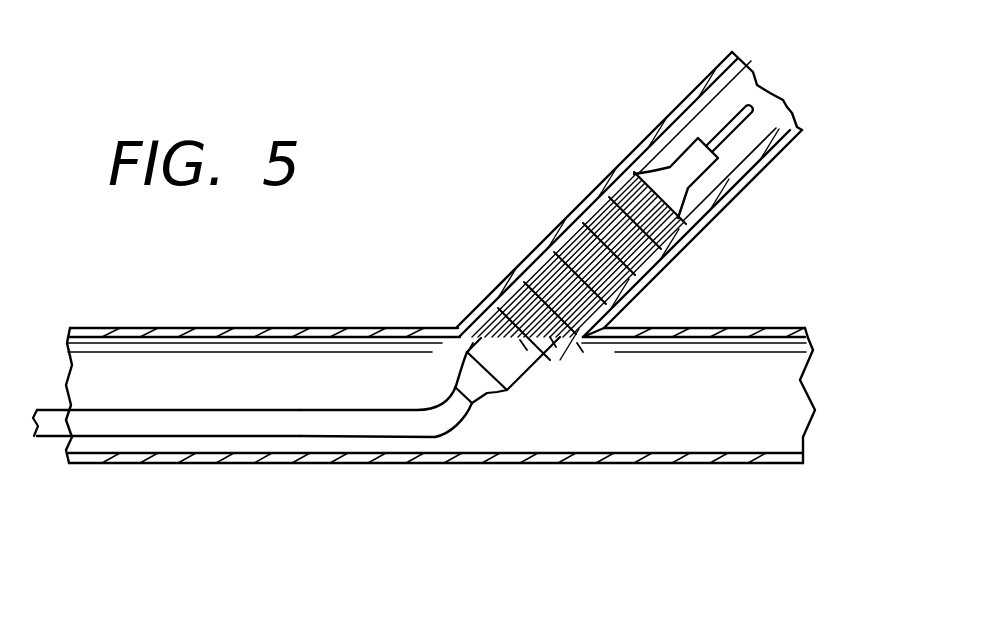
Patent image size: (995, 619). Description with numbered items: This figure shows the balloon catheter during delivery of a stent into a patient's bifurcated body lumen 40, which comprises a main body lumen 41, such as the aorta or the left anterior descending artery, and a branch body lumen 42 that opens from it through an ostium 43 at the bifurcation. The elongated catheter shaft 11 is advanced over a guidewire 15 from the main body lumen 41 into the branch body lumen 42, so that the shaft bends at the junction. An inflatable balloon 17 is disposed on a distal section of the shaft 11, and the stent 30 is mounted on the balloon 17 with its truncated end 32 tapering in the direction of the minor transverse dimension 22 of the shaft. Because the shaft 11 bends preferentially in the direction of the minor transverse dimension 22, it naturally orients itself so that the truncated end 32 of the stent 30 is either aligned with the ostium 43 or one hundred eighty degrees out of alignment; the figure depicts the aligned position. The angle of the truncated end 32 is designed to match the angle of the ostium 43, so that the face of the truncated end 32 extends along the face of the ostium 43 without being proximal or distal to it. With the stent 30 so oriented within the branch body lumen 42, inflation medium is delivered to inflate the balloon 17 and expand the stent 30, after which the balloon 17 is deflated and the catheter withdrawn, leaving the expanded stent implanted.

The catheter shaft 11 is at (182, 437).
The minor transverse dimension 22 is at (322, 424).
The inflatable balloon 17 is at (497, 393).
The truncated second end 32 is at (520, 340).
The stent 30 is at (612, 186).
The branch body lumen 42 is at (530, 252).
The bifurcated body lumen 40 is at (425, 326).
The main body lumen 41 is at (303, 326).
The ostium 43 is at (578, 340).
The guidewire 15 is at (727, 138).